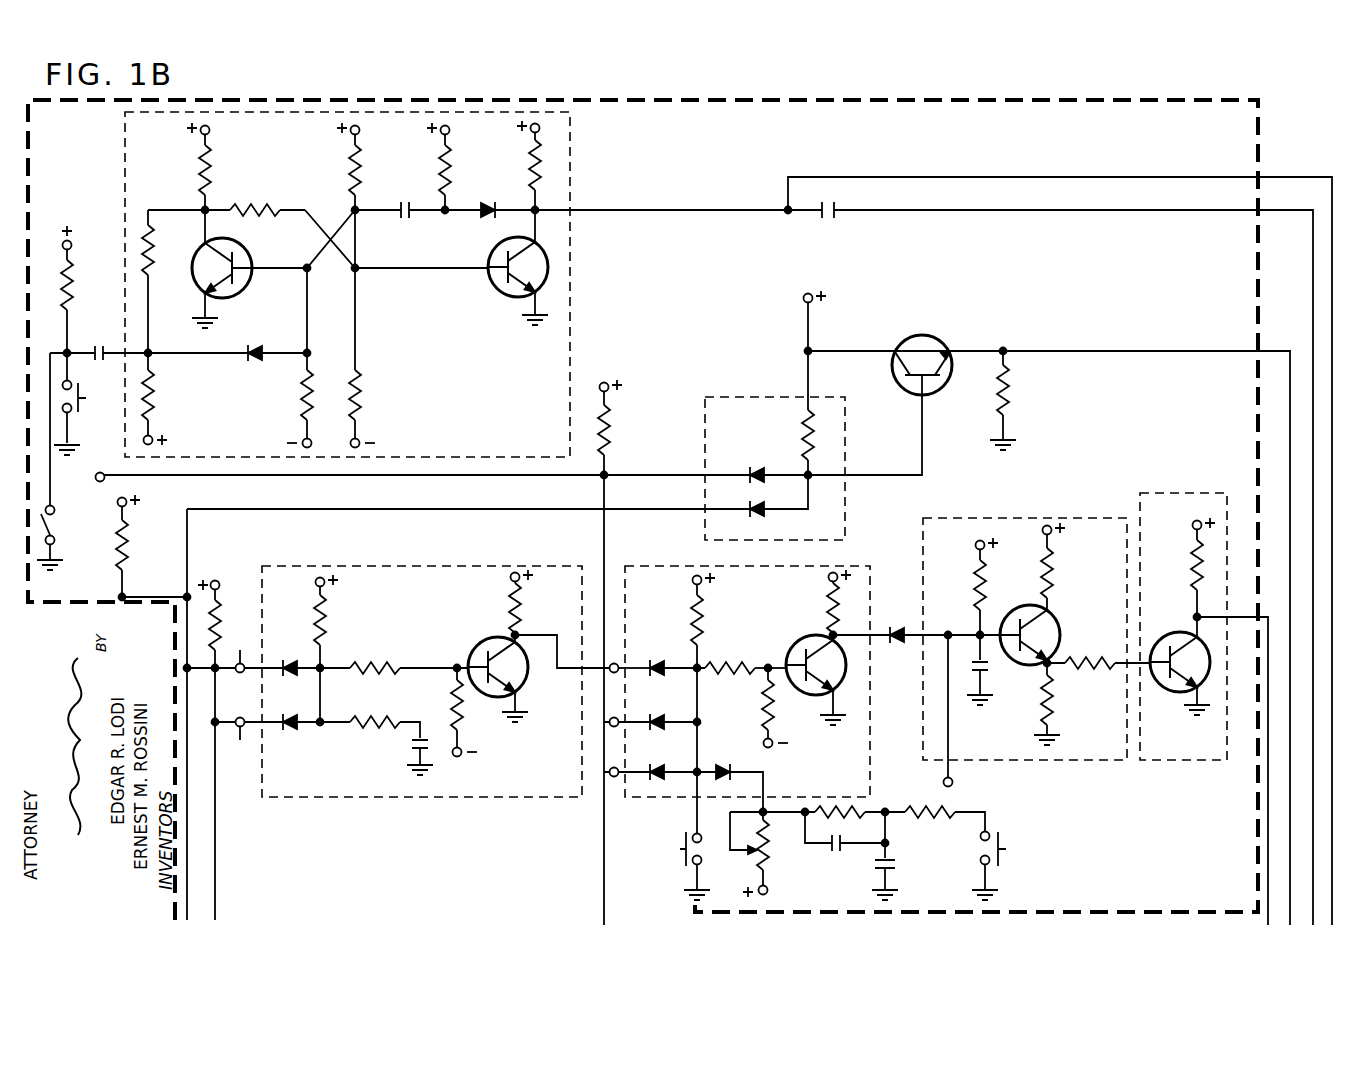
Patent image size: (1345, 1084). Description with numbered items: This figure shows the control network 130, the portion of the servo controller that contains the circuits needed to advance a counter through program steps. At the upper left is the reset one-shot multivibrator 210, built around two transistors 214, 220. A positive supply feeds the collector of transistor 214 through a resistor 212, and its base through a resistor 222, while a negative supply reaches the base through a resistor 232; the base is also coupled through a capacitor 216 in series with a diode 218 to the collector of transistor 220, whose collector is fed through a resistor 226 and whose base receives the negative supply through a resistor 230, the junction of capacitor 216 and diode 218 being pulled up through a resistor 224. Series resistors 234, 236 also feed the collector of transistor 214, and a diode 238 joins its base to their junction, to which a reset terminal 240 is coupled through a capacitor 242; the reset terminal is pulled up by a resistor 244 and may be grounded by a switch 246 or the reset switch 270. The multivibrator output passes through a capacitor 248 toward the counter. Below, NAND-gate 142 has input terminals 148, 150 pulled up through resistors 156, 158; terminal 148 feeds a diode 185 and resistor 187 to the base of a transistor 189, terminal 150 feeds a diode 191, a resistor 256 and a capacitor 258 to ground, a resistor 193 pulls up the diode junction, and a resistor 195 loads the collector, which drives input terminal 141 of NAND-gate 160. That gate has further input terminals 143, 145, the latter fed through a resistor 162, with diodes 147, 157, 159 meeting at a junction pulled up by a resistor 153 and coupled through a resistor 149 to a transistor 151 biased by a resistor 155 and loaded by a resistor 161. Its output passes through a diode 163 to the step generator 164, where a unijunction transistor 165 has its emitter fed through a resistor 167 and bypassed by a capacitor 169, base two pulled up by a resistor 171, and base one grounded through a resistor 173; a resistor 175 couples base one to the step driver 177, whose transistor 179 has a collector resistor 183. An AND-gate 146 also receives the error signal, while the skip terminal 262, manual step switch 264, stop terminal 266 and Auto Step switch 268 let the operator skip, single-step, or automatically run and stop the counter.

The control network 130 is at (657, 97).
The one-shot multivibrator 210 is at (577, 280).
The resistor 212 is at (212, 167).
The transistor 214 is at (255, 251).
The capacitor 216 is at (400, 195).
The diode 218 is at (488, 203).
The transistor 220 is at (490, 288).
The resistor 222 is at (350, 168).
The resistor 224 is at (453, 168).
The resistor 226 is at (548, 168).
The resistor 230 is at (362, 396).
The resistor 232 is at (303, 404).
The resistor 234 is at (154, 404).
The resistor 236 is at (223, 278).
The diode 238 is at (255, 350).
The reset terminal 240 is at (70, 351).
The capacitor 242 is at (91, 382).
The resistor 244 is at (87, 289).
The switch 246 is at (86, 427).
The capacitor 248 is at (838, 221).
The skip terminal 262 is at (100, 472).
The reset switch 270 is at (54, 531).
The resistor 156 is at (126, 545).
The resistor 158 is at (220, 618).
The NAND-gate 142 is at (348, 565).
The input terminal 148 is at (235, 647).
The input terminal 150 is at (249, 745).
The diode 185 is at (290, 660).
The diode 191 is at (290, 742).
The resistor 187 is at (372, 664).
The resistor 256 is at (380, 716).
The capacitor 258 is at (412, 758).
The transistor 189 is at (483, 652).
The resistor 193 is at (327, 620).
The resistor 195 is at (522, 614).
The NAND-gate 160 is at (862, 565).
The input terminal 141 is at (615, 663).
The input terminal 143 is at (613, 778).
The input terminal 145 is at (611, 727).
The diode 147 is at (657, 660).
The diode 157 is at (657, 714).
The diode 159 is at (657, 764).
The resistor 153 is at (702, 616).
The resistor 149 is at (733, 660).
The resistor 155 is at (763, 707).
The transistor 151 is at (805, 636).
The resistor 161 is at (829, 596).
The resistor 162 is at (610, 430).
The diode 163 is at (897, 628).
The AND-gate 146 is at (760, 398).
The step generator 164 is at (1038, 517).
The unijunction transistor 165 is at (1050, 624).
The resistor 167 is at (973, 586).
The capacitor 169 is at (990, 676).
The resistor 171 is at (1051, 568).
The resistor 173 is at (1055, 709).
The resistor 175 is at (1075, 660).
The step driver 177 is at (1172, 494).
The transistor 179 is at (1175, 640).
The resistor 183 is at (1188, 574).
The manual step switch 264 is at (1006, 849).
The stop terminal 266 is at (954, 782).
The Auto Step switch 268 is at (683, 849).